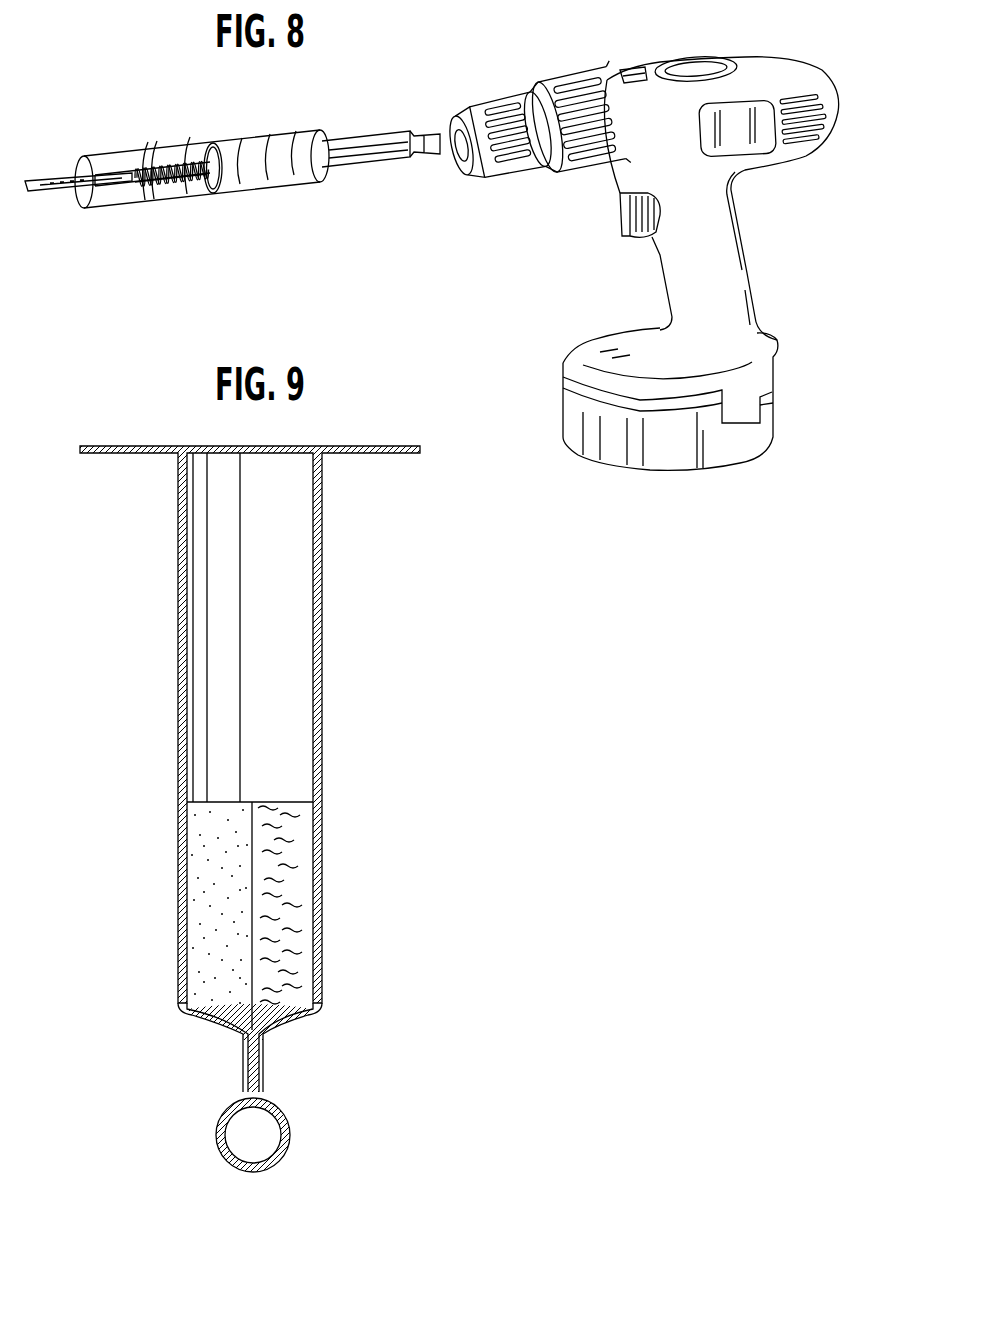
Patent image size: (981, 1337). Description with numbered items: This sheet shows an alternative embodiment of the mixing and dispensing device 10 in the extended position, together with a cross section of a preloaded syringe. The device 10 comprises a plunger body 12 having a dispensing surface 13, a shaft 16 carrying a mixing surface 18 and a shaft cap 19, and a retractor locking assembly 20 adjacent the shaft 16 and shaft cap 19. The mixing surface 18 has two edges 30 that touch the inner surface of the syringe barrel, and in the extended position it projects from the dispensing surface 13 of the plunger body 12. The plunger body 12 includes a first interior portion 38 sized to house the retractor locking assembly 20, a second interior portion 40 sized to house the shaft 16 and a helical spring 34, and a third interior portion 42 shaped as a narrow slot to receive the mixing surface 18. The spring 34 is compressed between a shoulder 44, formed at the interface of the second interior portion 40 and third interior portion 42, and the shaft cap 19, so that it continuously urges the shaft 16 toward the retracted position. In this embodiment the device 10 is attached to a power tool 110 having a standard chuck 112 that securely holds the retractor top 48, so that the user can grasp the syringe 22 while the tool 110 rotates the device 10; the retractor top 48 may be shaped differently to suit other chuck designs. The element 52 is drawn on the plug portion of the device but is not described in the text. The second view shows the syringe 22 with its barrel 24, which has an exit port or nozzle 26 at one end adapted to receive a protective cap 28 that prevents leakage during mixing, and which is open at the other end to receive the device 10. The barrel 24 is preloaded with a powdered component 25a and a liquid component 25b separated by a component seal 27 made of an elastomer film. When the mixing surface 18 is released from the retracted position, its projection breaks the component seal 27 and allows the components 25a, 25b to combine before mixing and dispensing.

In FIG. 8, the device 10 is at (112, 72).
In FIG. 8, the plunger body 12 is at (148, 145).
In FIG. 8, the dispensing surface 13 is at (86, 160).
In FIG. 8, the shaft 16 is at (166, 183).
In FIG. 8, the mixing surface 18 is at (70, 194).
In FIG. 8, the shaft cap 19 is at (220, 192).
In FIG. 8, the retractor locking assembly 20 is at (347, 178).
In FIG. 8, the edges 30 is at (127, 193).
In FIG. 8, the helical spring 34 is at (185, 177).
In FIG. 8, the first interior portion 38 is at (258, 138).
In FIG. 8, the second interior portion 40 is at (190, 152).
In FIG. 8, the third interior portion 42 is at (115, 168).
In FIG. 8, the shoulder 44 is at (130, 170).
In FIG. 8, the retractor top 48 is at (380, 135).
In FIG. 8, the plug 52 is at (258, 178).
In FIG. 8, the power tool 110 is at (783, 63).
In FIG. 8, the chuck 112 is at (441, 166).
In FIG. 9, the syringe 22 is at (370, 605).
In FIG. 9, the barrel 24 is at (322, 695).
In FIG. 9, the powdered component 25a is at (195, 845).
In FIG. 9, the liquid component 25b is at (295, 856).
In FIG. 9, the nozzle 26 is at (263, 1062).
In FIG. 9, the component seal 27 is at (253, 820).
In FIG. 9, the protective cap 28 is at (290, 1134).